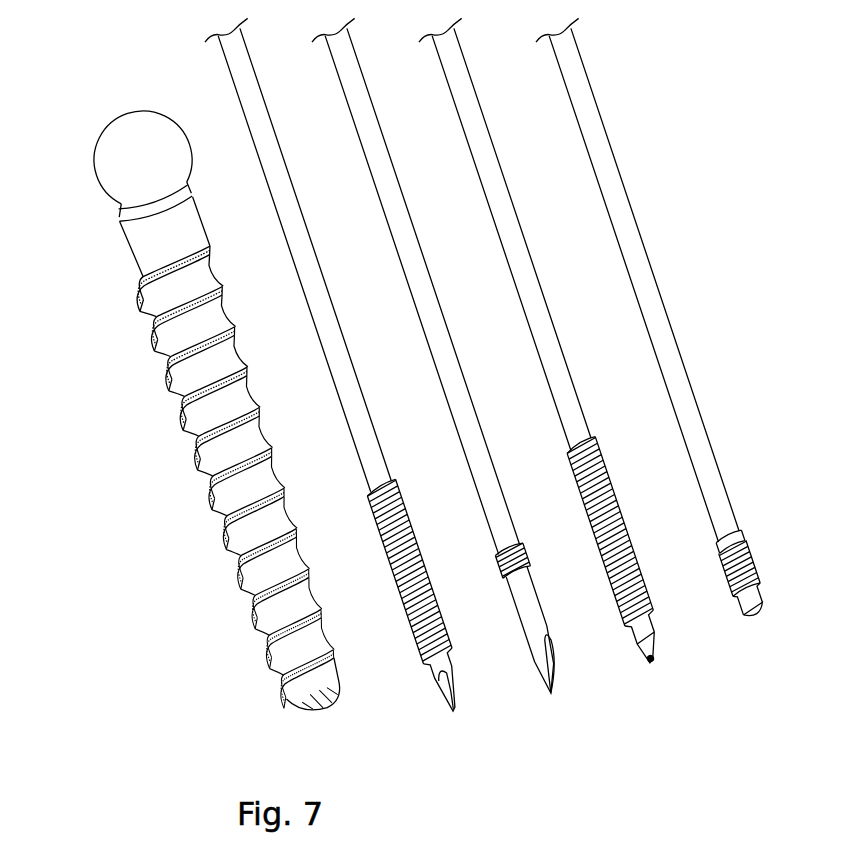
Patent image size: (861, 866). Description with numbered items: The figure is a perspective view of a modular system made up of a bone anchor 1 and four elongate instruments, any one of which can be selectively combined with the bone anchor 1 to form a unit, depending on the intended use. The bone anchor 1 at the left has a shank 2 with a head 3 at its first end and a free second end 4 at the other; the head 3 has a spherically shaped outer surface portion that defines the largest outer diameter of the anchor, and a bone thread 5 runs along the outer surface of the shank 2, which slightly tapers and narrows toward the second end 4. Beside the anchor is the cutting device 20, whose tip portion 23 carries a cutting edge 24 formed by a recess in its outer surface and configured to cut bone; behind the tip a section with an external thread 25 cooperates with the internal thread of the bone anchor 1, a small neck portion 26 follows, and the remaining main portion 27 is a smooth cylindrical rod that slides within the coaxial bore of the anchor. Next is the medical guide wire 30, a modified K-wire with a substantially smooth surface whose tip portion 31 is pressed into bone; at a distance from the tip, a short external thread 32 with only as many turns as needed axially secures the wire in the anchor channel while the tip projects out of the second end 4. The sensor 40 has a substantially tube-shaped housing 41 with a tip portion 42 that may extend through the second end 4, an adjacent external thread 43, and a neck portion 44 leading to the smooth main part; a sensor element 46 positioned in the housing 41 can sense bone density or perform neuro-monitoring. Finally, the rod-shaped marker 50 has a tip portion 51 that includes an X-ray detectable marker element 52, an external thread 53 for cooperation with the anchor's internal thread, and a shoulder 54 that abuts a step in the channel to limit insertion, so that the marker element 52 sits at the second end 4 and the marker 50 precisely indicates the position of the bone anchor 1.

The bone anchor 1 is at (134, 352).
The shank 2 is at (196, 393).
The head 3 is at (93, 162).
The free second end 4 is at (313, 705).
The bone thread 5 is at (190, 428).
The cutting device 20 is at (306, 250).
The tip portion 23 is at (453, 681).
The cutting edge 24 is at (443, 693).
The external thread 25 is at (407, 590).
The neck portion 26 is at (373, 492).
The main portion 27 is at (341, 371).
The medical guide wire 30 is at (425, 290).
The tip portion 31 is at (539, 672).
The external thread 32 is at (497, 563).
The sensor 40 is at (546, 319).
The housing 41 is at (555, 421).
The tip portion 42 is at (635, 634).
The external thread 43 is at (615, 497).
The neck portion 44 is at (593, 443).
The sensor element 46 is at (655, 666).
The marker 50 is at (680, 343).
The tip portion 51 is at (762, 597).
The marker element 52 is at (747, 619).
The external thread 53 is at (752, 560).
The shoulder 54 is at (743, 538).